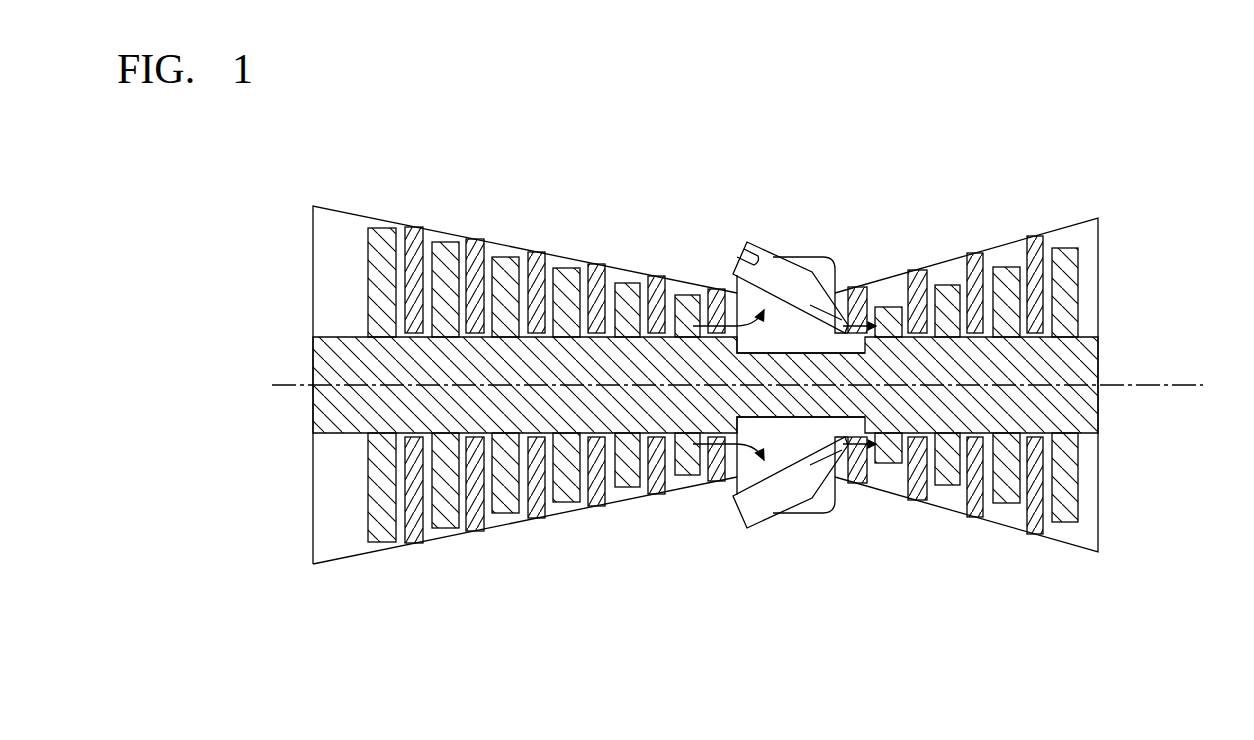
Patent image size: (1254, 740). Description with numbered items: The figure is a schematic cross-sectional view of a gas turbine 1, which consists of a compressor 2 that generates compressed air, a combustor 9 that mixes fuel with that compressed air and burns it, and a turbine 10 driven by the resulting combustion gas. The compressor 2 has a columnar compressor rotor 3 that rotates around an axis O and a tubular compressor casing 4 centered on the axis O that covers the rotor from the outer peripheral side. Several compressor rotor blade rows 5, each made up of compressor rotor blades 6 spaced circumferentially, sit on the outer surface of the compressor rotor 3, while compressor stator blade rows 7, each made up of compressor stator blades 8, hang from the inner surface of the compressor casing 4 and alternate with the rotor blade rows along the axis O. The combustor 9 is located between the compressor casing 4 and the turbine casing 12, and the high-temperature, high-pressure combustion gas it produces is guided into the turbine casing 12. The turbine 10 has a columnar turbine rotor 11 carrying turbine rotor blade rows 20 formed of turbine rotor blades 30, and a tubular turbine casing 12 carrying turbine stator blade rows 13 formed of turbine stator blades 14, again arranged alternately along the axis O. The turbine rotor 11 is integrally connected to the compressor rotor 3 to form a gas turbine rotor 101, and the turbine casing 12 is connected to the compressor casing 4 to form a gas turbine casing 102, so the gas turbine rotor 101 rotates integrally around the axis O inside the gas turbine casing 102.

The gas turbine 1 is at (746, 360).
The compressor 2 is at (538, 382).
The compressor rotor 3 is at (682, 400).
The compressor casing 4 is at (552, 252).
The compressor rotor blade row 5 is at (521, 437).
The compressor rotor blade 6 is at (377, 538).
The compressor stator blade row 7 is at (565, 420).
The compressor stator blade 8 is at (415, 540).
The combustor 9 is at (803, 250).
The turbine 10 is at (980, 379).
The turbine rotor 11 is at (1018, 421).
The turbine casing 12 is at (937, 263).
The turbine stator blade row 13 is at (986, 432).
The turbine stator blade 14 is at (975, 507).
The turbine rotor blade row 20 is at (1039, 421).
The turbine rotor blade 30 is at (1007, 490).
The gas turbine rotor 101 is at (758, 446).
The gas turbine casing 102 is at (646, 243).
The axis O is at (1190, 386).